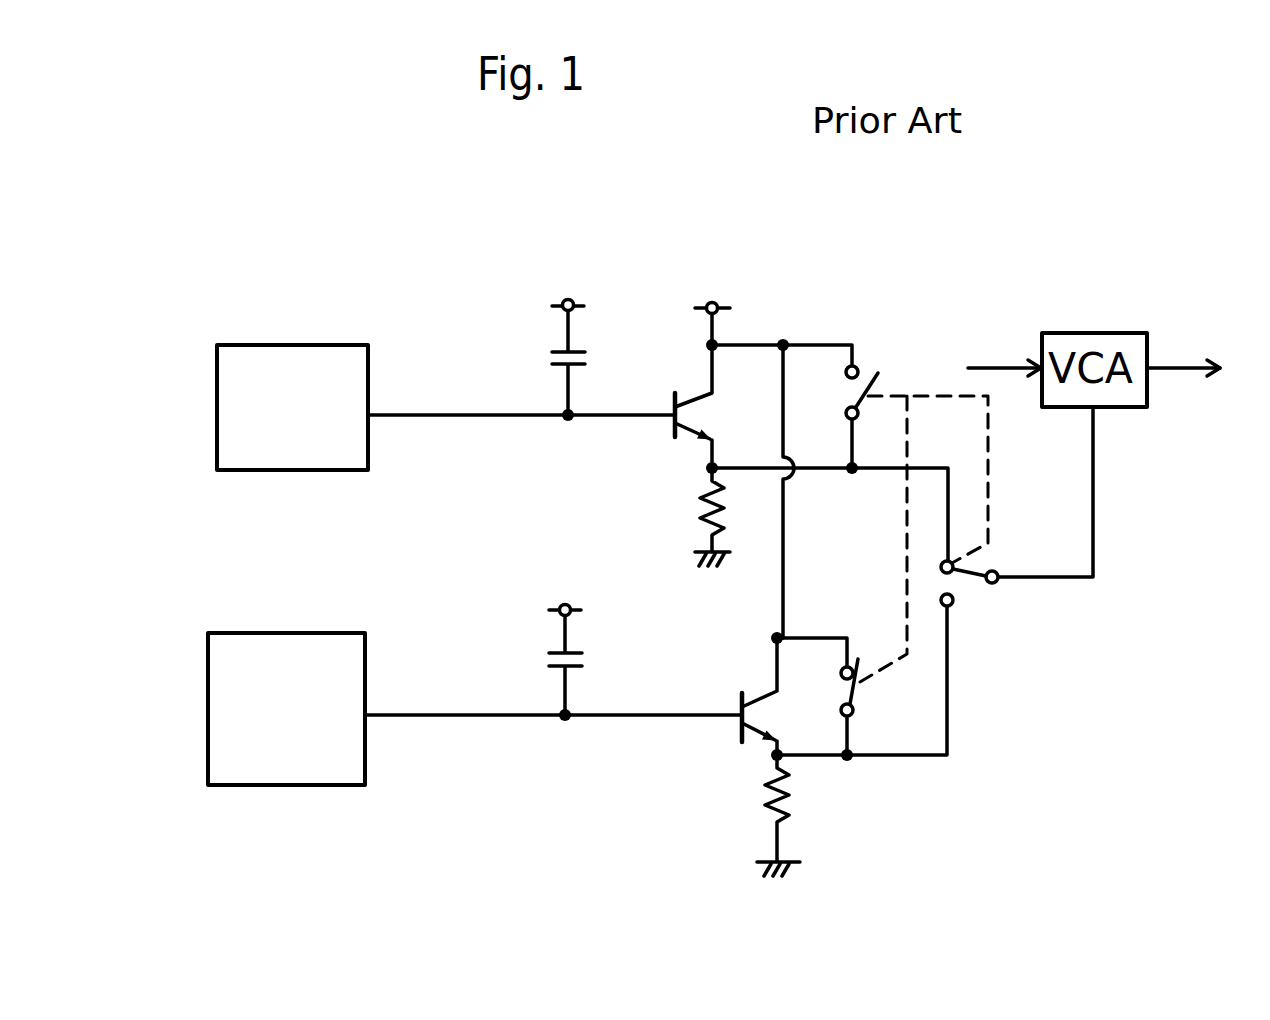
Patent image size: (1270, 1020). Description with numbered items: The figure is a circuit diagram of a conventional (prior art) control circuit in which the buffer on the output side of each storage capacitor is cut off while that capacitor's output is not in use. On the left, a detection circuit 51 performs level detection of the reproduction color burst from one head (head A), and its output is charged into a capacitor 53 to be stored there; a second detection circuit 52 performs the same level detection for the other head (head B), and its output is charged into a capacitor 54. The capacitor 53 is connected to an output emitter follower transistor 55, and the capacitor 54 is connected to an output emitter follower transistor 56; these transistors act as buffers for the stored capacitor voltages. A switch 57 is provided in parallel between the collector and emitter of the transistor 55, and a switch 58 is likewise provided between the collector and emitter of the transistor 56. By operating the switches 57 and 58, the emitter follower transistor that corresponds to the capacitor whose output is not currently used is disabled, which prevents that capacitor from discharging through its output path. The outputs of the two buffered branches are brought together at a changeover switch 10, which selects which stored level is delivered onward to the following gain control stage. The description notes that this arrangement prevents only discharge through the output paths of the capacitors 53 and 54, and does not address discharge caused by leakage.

The changeover switch 10 is at (952, 580).
The detection circuit 51 is at (283, 378).
The detection circuit 52 is at (291, 668).
The capacitor 53 is at (552, 360).
The capacitor 54 is at (545, 655).
The output emitter follower transistor 55 is at (693, 420).
The output emitter follower transistor 56 is at (763, 690).
The switch 57 is at (872, 387).
The switch 58 is at (860, 698).